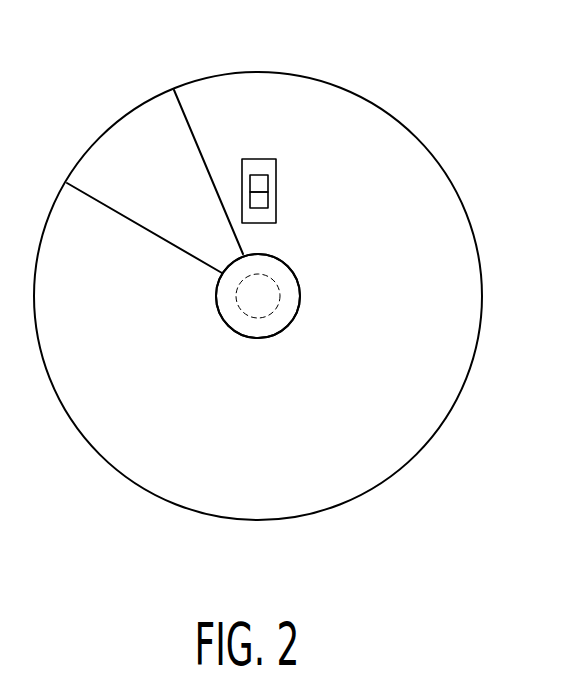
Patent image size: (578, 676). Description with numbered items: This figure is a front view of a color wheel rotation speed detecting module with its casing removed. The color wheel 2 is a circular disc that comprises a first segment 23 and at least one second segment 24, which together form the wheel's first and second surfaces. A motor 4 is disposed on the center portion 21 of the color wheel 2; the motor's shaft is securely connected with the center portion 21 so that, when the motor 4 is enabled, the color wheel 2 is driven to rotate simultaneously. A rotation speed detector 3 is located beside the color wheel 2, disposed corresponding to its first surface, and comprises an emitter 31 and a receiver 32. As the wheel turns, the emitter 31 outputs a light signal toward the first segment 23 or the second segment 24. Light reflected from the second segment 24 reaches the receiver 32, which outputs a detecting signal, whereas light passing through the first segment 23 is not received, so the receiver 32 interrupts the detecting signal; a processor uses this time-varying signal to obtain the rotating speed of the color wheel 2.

The color wheel 2 is at (372, 423).
The center portion 21 is at (268, 295).
The first segment 23 is at (105, 155).
The second segment 24 is at (185, 485).
The rotation speed detector 3 is at (250, 168).
The emitter 31 is at (267, 180).
The receiver 32 is at (262, 205).
The motor 4 is at (225, 308).